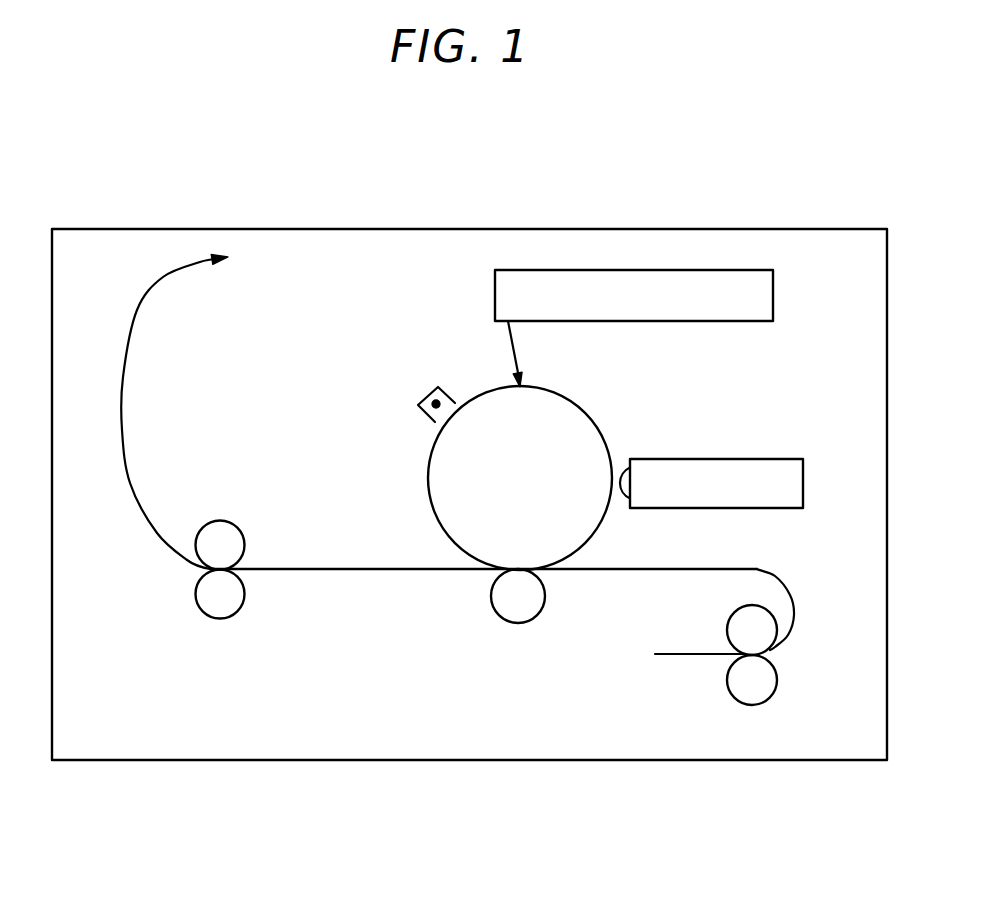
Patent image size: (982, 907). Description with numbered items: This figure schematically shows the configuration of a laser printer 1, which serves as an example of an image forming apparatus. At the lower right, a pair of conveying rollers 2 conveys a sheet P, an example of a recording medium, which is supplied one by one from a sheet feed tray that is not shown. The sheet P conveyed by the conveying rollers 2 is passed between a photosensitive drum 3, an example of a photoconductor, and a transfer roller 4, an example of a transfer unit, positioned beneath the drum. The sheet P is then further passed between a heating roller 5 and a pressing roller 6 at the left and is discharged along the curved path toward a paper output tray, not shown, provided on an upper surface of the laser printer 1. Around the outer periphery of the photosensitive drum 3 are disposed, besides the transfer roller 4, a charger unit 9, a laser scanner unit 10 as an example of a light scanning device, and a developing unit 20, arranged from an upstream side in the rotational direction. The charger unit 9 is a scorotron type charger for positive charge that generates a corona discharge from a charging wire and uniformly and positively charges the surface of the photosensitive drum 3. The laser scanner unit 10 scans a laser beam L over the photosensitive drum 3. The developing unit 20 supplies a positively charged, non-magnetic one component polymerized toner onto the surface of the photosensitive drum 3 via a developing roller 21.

The laser printer 1 is at (764, 218).
The pair of conveying rollers 2 is at (777, 668).
The photosensitive drum 3 is at (487, 392).
The transfer roller 4 is at (517, 623).
The heating roller 5 is at (220, 520).
The pressing roller 6 is at (220, 619).
The charger unit 9 is at (418, 405).
The laser scanner unit 10 is at (740, 322).
The developing unit 20 is at (790, 458).
The developing roller 21 is at (618, 468).
The laser beam L is at (515, 345).
The sheet P is at (678, 568).